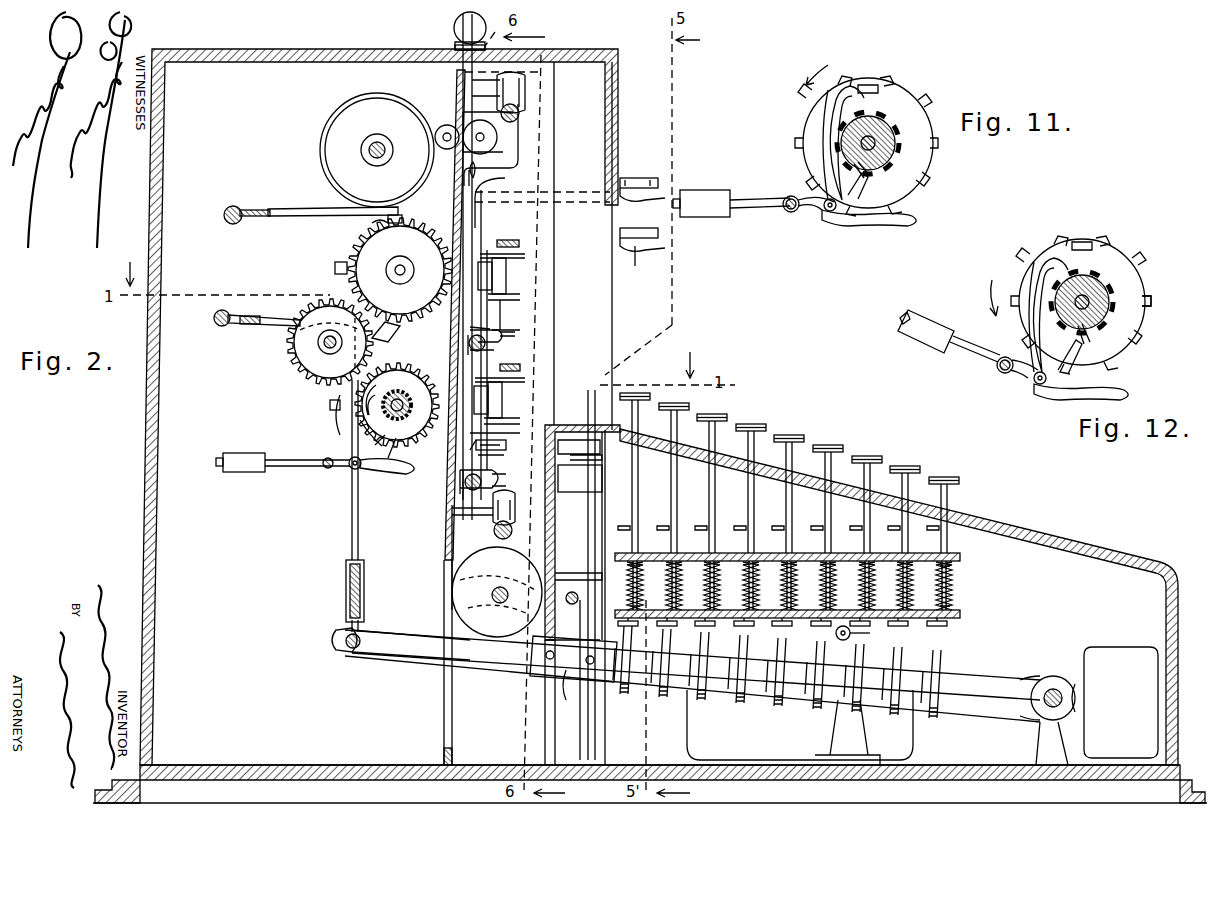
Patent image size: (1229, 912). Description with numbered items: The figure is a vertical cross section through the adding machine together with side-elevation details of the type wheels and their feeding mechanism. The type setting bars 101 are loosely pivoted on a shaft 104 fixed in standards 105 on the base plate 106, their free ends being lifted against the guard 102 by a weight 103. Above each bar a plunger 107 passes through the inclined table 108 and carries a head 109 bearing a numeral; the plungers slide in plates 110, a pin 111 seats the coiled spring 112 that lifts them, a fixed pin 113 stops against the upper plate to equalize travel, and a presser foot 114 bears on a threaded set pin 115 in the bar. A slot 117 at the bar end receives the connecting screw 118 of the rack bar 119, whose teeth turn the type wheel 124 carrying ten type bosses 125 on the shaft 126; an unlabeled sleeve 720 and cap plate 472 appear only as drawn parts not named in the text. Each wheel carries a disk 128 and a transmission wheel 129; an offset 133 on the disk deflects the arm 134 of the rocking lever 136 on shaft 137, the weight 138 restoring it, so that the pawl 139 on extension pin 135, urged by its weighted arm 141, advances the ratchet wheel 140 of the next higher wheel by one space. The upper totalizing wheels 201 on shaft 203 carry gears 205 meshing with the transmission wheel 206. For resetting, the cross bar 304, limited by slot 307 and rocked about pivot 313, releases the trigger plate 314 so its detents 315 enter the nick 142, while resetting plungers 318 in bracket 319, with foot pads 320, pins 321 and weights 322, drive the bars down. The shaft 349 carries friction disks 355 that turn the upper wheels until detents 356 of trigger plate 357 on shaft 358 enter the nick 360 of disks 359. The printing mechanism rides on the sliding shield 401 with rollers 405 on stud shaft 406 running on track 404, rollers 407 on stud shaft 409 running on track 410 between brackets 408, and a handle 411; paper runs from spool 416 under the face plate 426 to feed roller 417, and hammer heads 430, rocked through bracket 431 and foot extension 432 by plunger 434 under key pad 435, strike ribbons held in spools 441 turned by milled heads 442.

In FIG. 2, the type setting bar 101 is at (756, 712).
In FIG. 2, the guard 102 is at (443, 612).
In FIG. 2, the weight 103 is at (1136, 660).
In FIG. 2, the shaft 104 is at (1054, 688).
In FIG. 2, the standard 105 is at (1048, 737).
In FIG. 2, the base plate 106 is at (1035, 785).
In FIG. 2, the plunger 107 is at (634, 502).
In FIG. 2, the inclined table 108 is at (1010, 532).
In FIG. 2, the head 109 is at (650, 394).
In FIG. 2, the plate 110 is at (960, 557).
In FIG. 2, the pin 111 is at (966, 576).
In FIG. 2, the coiled spring 112 is at (952, 585).
In FIG. 2, the fixed pin 113 is at (632, 528).
In FIG. 2, the presser foot 114 is at (950, 640).
In FIG. 2, the set pin 115 is at (622, 700).
In FIG. 2, the slot 117 is at (336, 635).
In FIG. 2, the connecting screw 118 is at (354, 656).
In FIG. 2, the rack bar 119 is at (352, 436).
In FIG. 2, the type wheel 124 is at (342, 418).
In FIG. 2, the type carrying boss 125 is at (330, 405).
In FIG. 12, the type carrying boss 125 is at (1146, 274).
In FIG. 11, the shaft 126 is at (876, 150).
In FIG. 12, the shaft 126 is at (1088, 290).
In FIG. 11, the disk 128 is at (904, 100).
In FIG. 12, the disk 128 is at (1024, 262).
In FIG. 2, the transmission wheel 129 is at (390, 450).
In FIG. 11, the offset 133 is at (866, 174).
In FIG. 12, the offset 133 is at (1086, 332).
In FIG. 11, the arm 134 is at (852, 192).
In FIG. 12, the arm 134 is at (1062, 380).
In FIG. 11, the extension pin 135 is at (828, 212).
In FIG. 12, the extension pin 135 is at (1040, 378).
In FIG. 2, the rocking lever 136 is at (292, 466).
In FIG. 11, the rocking lever 136 is at (760, 210).
In FIG. 12, the rocking lever 136 is at (970, 358).
In FIG. 11, the shaft 137 is at (788, 198).
In FIG. 12, the shaft 137 is at (1004, 372).
In FIG. 2, the weight 138 is at (244, 465).
In FIG. 11, the weight 138 is at (702, 212).
In FIG. 12, the weight 138 is at (920, 346).
In FIG. 11, the pawl 139 is at (826, 129).
In FIG. 12, the pawl 139 is at (1042, 290).
In FIG. 2, the ratchet wheel 140 is at (397, 405).
In FIG. 11, the ratchet wheel 140 is at (878, 135).
In FIG. 12, the ratchet wheel 140 is at (1110, 302).
In FIG. 2, the weighted arm 141 is at (408, 470).
In FIG. 11, the weighted arm 141 is at (912, 220).
In FIG. 12, the weighted arm 141 is at (1124, 387).
In FIG. 11, the nick 142 is at (868, 85).
In FIG. 12, the nick 142 is at (1060, 250).
In FIG. 2, the totalizing type wheel 201 is at (335, 268).
In FIG. 2, the shaft 203 is at (400, 266).
In FIG. 2, the gear wheel 205 is at (372, 250).
In FIG. 2, the transmission wheel 206 is at (290, 350).
In FIG. 2, the cross bar 304 is at (545, 600).
In FIG. 2, the slot 307 is at (642, 259).
In FIG. 2, the pivot 313 is at (866, 633).
In FIG. 2, the trigger plate 314 is at (236, 318).
In FIG. 2, the detent 315 is at (400, 332).
In FIG. 2, the resetting plunger 318 is at (588, 405).
In FIG. 2, the bracket 319 is at (578, 509).
In FIG. 2, the foot pad 320 is at (573, 668).
In FIG. 2, the pin 321 is at (492, 590).
In FIG. 2, the weight 322 is at (572, 492).
In FIG. 2, the shaft 349 is at (377, 146).
In FIG. 2, the friction disk 355 is at (322, 150).
In FIG. 2, the detent 356 is at (328, 208).
In FIG. 2, the trigger plate 357 is at (262, 210).
In FIG. 2, the shaft 358 is at (218, 215).
In FIG. 2, the disk 359 is at (372, 224).
In FIG. 2, the nick 360 is at (398, 215).
In FIG. 2, the sliding shield 401 is at (448, 535).
In FIG. 2, the track 404 is at (494, 532).
In FIG. 2, the roller 405 is at (510, 530).
In FIG. 2, the stud shaft 406 is at (450, 500).
In FIG. 2, the roller 407 is at (525, 92).
In FIG. 2, the bracket 408 is at (512, 150).
In FIG. 2, the stud shaft 409 is at (482, 90).
In FIG. 2, the track 410 is at (519, 115).
In FIG. 2, the handle 411 is at (454, 22).
In FIG. 2, the paper spool 416 is at (448, 578).
In FIG. 2, the feed roller 417 is at (490, 137).
In FIG. 2, the face plate 426 is at (489, 172).
In FIG. 2, the hammer head 430 is at (482, 278).
In FIG. 2, the bracket 431 is at (502, 337).
In FIG. 2, the foot extension 432 is at (498, 322).
In FIG. 2, the plunger 434 is at (472, 236).
In FIG. 2, the key pad 435 is at (632, 178).
In FIG. 2, the spool 441 is at (526, 256).
In FIG. 2, the milled head 442 is at (511, 295).
In FIG. 2, the cap plate 472 is at (520, 52).
In FIG. 2, the sleeve 720 is at (346, 585).